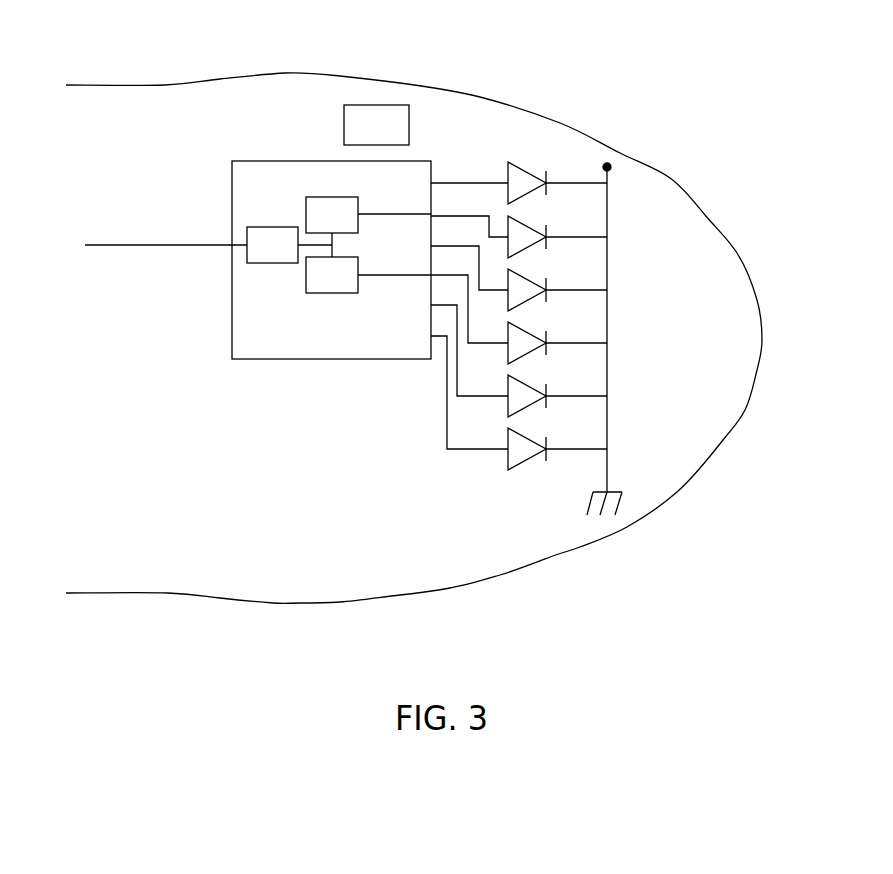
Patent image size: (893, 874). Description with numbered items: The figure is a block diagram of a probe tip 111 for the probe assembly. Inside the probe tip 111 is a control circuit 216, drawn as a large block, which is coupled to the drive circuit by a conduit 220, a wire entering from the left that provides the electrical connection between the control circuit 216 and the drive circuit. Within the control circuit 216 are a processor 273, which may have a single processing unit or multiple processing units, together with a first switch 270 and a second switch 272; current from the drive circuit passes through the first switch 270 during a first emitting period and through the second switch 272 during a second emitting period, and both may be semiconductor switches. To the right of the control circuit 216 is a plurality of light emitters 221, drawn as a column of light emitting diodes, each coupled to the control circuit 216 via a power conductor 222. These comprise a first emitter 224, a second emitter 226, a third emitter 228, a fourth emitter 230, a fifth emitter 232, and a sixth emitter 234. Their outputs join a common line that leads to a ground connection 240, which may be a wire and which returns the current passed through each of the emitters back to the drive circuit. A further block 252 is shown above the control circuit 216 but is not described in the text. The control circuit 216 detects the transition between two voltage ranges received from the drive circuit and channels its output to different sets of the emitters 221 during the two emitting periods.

The probe tip 111 is at (573, 92).
The control circuit 216 is at (305, 158).
The conduit 220 is at (145, 240).
The light emitters 221 is at (623, 178).
The power conductor 222 is at (446, 180).
The first emitter 224 is at (530, 170).
The second emitter 226 is at (523, 223).
The third emitter 228 is at (528, 275).
The fourth emitter 230 is at (528, 328).
The fifth emitter 232 is at (528, 381).
The sixth emitter 234 is at (528, 434).
The ground connection 240 is at (607, 477).
The power supply 252 is at (366, 103).
The first switch 270 is at (368, 215).
The second switch 272 is at (368, 275).
The processor 273 is at (289, 245).